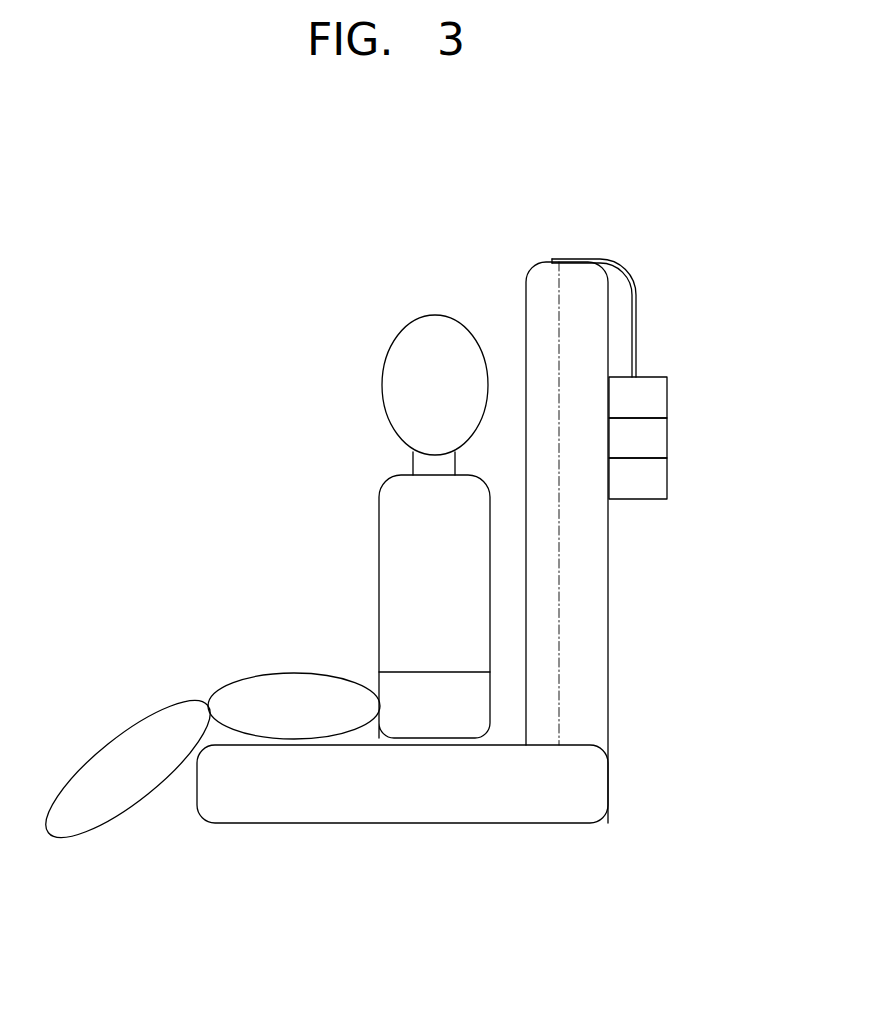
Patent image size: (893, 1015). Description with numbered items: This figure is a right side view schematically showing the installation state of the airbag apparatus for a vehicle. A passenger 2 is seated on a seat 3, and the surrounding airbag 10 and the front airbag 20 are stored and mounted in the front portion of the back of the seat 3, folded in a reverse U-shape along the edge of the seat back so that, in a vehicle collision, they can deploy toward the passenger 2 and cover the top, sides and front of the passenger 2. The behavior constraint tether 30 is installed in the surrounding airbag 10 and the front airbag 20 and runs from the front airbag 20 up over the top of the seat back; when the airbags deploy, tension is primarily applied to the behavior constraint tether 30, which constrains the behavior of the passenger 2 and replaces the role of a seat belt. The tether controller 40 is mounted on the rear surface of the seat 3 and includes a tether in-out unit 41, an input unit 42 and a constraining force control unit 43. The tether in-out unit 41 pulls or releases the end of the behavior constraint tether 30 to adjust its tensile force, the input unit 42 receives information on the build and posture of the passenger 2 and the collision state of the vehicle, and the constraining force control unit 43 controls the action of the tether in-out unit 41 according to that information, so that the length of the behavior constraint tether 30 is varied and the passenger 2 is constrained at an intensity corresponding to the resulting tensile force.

The surrounding airbag 10 is at (510, 303).
The front airbag 20 is at (600, 542).
The seat 3 is at (583, 675).
The behavior constraint tether 30 is at (613, 262).
The tether controller 40 is at (664, 509).
The tether in-out unit 41 is at (658, 393).
The constraining force control unit 43 is at (658, 436).
The input unit 42 is at (658, 477).
The passenger 2 is at (402, 591).